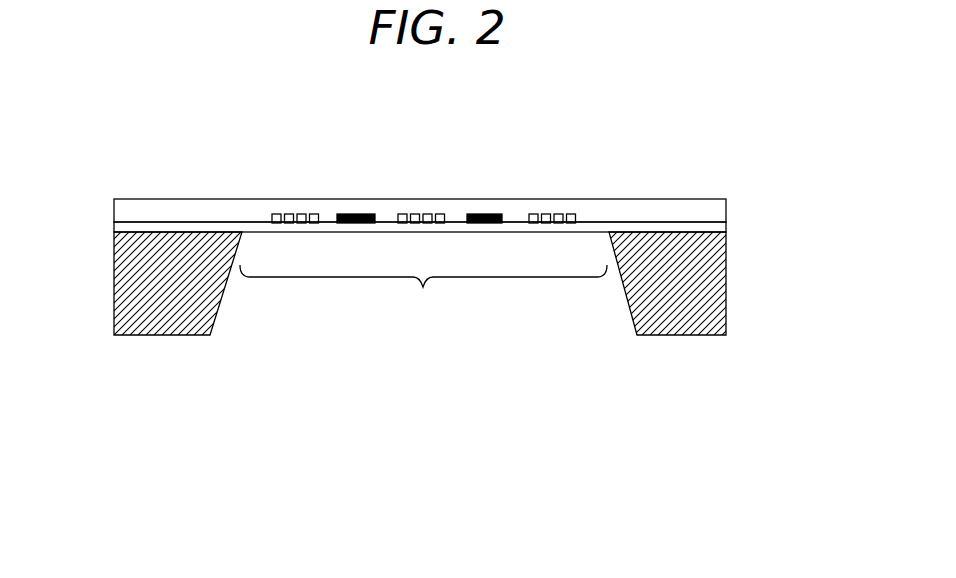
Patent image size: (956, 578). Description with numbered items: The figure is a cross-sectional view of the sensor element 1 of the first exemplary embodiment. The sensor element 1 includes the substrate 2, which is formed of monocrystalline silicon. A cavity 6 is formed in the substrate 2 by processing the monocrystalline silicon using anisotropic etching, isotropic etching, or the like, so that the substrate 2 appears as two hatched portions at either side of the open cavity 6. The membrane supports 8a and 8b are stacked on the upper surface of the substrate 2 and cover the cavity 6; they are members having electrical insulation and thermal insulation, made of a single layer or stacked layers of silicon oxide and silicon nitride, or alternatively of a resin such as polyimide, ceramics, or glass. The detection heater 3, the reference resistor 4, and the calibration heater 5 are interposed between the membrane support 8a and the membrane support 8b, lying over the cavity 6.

The sensor element 1 is at (150, 163).
The substrate 2 is at (163, 312).
The detection heater 3 is at (357, 214).
The reference resistor 4 is at (497, 214).
The calibration heater 5 is at (290, 214).
The cavity 6 is at (423, 297).
The membrane support 8a is at (719, 227).
The membrane support 8b is at (719, 210).